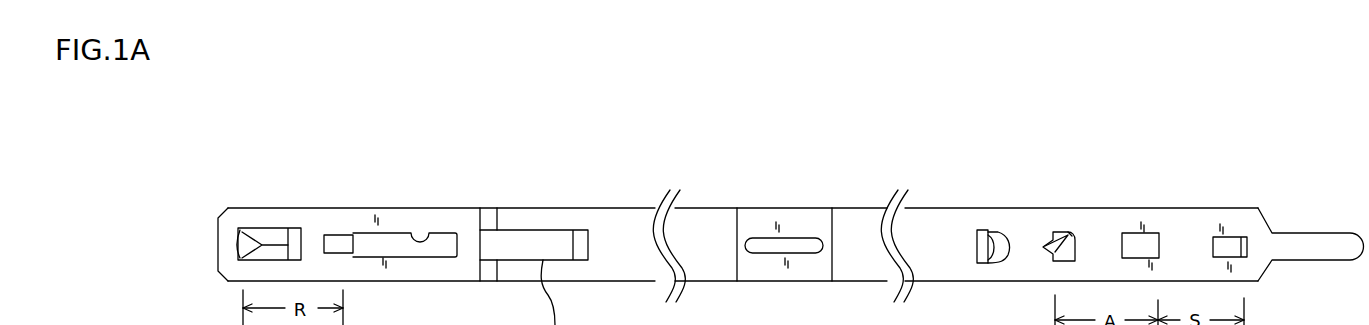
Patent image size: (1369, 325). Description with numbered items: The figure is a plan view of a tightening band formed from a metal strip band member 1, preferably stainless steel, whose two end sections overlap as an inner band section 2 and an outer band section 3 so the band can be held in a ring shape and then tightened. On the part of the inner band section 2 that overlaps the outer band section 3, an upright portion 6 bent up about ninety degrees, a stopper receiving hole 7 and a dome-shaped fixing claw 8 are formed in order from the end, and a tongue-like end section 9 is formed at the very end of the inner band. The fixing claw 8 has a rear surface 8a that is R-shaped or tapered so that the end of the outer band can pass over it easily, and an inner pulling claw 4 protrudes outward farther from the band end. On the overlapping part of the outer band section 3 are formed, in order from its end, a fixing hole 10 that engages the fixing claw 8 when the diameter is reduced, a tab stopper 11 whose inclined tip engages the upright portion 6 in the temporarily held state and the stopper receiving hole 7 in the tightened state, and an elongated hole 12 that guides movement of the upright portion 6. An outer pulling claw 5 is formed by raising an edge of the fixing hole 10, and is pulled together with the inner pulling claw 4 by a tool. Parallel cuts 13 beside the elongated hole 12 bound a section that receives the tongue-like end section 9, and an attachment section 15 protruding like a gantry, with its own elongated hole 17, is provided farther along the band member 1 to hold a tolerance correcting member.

The band member 1 is at (632, 193).
The inner band section 2 is at (1181, 227).
The outer band section 3 is at (318, 215).
The inner pulling claw 4 is at (985, 232).
The outer pulling claw 5 is at (281, 232).
The upright portion 6 is at (1245, 240).
The stopper receiving hole 7 is at (1135, 235).
The fixing claw 8 is at (1053, 247).
The surface 8a is at (1072, 233).
The tongue-like end section 9 is at (1323, 248).
The fixing hole 10 is at (243, 232).
The tab stopper 11 is at (340, 240).
The elongated hole 12 is at (436, 235).
The cuts 13 is at (548, 230).
The attachment section 15 is at (805, 210).
The elongated hole 17 is at (757, 247).